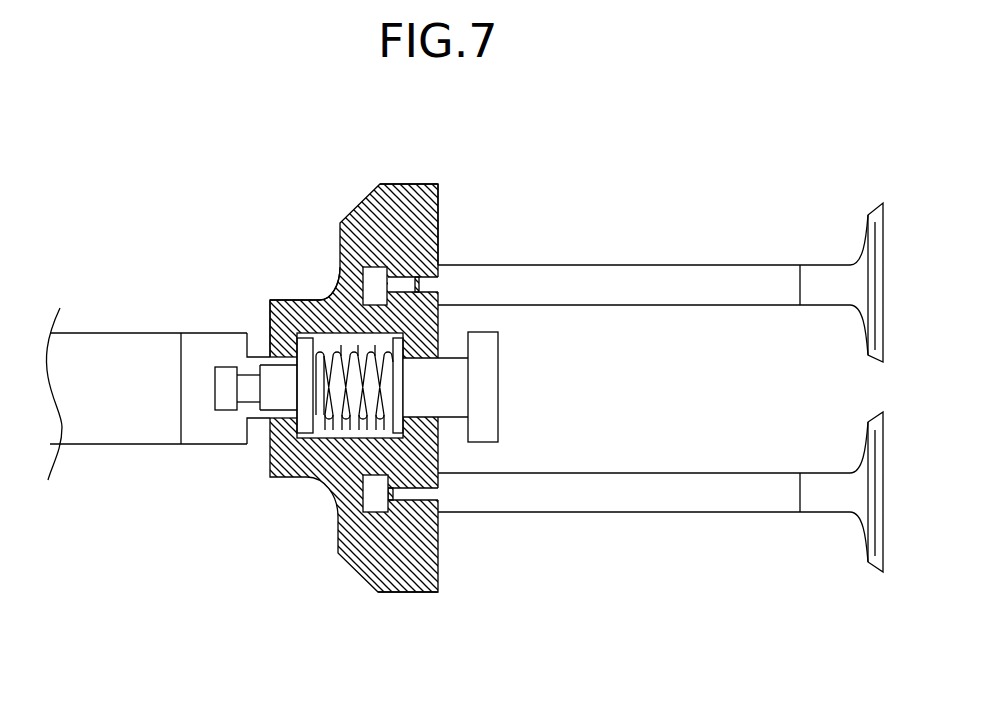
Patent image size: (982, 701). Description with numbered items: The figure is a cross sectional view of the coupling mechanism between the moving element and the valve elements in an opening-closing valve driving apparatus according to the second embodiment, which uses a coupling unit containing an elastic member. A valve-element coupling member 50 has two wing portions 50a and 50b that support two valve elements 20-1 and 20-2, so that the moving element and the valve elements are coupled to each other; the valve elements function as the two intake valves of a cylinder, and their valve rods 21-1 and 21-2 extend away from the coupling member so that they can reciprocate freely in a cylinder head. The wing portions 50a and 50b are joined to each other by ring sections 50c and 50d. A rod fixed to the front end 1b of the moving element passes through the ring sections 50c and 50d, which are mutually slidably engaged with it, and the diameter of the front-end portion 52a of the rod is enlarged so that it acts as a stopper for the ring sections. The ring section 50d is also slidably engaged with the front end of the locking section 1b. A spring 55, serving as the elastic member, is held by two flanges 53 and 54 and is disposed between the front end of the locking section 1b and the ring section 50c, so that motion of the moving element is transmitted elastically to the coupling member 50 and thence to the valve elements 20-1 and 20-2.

The front end of the moving element 1b is at (86, 358).
The valve element 20-1 is at (660, 232).
The valve element 20-2 is at (660, 508).
The valve rod 21-1 is at (633, 272).
The valve rod 21-2 is at (662, 480).
The valve-element coupling member 50 is at (503, 638).
The wing portion 50a is at (418, 183).
The wing portion 50b is at (402, 593).
The ring section 50c is at (385, 183).
The ring section 50d is at (270, 328).
The front-end portion of the rod 52a is at (483, 347).
The flange 53 is at (380, 305).
The flange 54 is at (287, 298).
The spring 55 is at (322, 295).